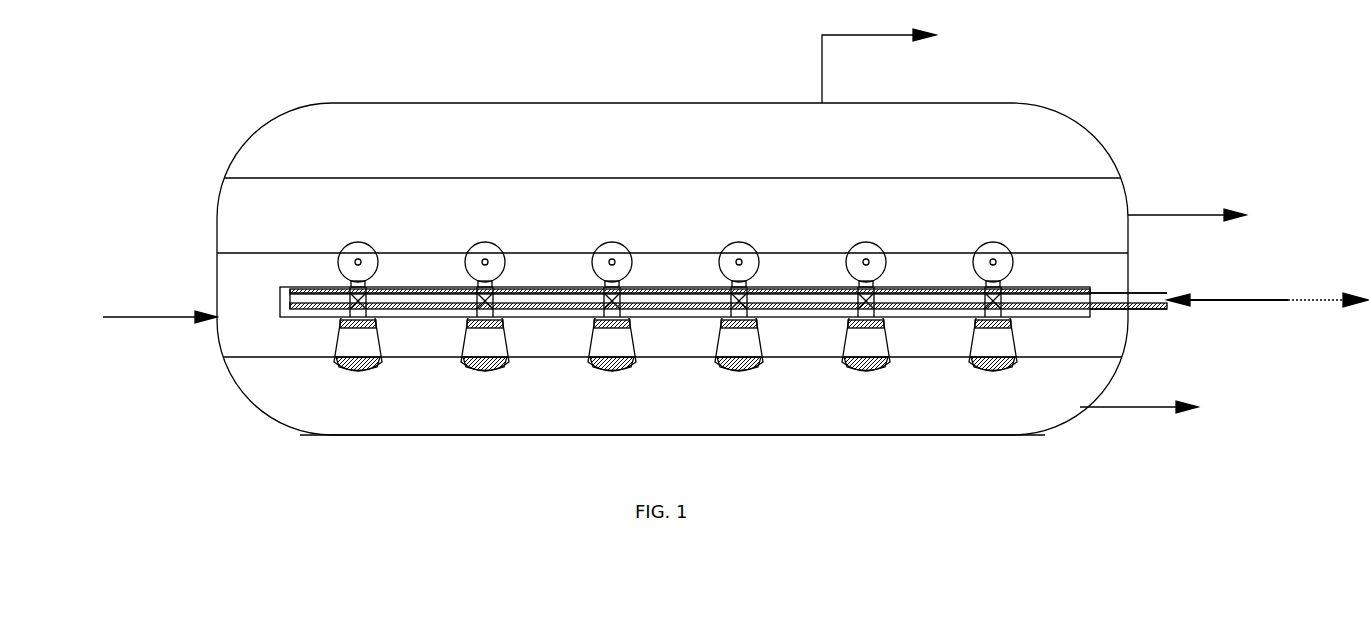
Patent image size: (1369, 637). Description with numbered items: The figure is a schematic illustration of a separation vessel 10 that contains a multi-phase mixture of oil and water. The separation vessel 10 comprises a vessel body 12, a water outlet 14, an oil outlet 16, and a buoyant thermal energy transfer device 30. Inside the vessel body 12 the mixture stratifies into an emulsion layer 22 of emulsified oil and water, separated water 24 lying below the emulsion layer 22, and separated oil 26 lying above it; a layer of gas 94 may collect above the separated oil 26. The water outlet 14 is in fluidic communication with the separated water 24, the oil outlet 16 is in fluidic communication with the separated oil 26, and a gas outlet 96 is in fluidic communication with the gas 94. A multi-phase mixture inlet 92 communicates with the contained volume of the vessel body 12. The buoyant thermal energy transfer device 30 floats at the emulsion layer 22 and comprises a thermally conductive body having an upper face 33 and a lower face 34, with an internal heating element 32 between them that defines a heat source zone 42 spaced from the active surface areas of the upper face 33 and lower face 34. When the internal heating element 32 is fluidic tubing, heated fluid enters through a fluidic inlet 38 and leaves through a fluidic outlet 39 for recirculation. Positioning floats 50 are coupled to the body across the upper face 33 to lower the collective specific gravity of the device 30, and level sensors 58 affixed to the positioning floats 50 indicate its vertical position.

The separation vessel 10 is at (222, 146).
The vessel body 12 is at (1098, 147).
The water outlet 14 is at (1139, 400).
The oil outlet 16 is at (1187, 208).
The emulsion layer 22 is at (280, 345).
The separated water 24 is at (372, 416).
The separated oil 26 is at (270, 231).
The buoyant thermal energy transfer device 30 is at (693, 293).
The internal heating element 32 is at (1159, 306).
The upper face 33 is at (782, 288).
The lower face 34 is at (782, 318).
The fluidic inlet 38 is at (1227, 293).
The fluidic outlet 39 is at (1328, 293).
The heat source zone 42 is at (278, 304).
The positioning floats 50 is at (675, 255).
The level sensors 58 is at (616, 245).
The multi-phase mixture inlet 92 is at (160, 309).
The gas 94 is at (367, 153).
The gas outlet 96 is at (879, 59).